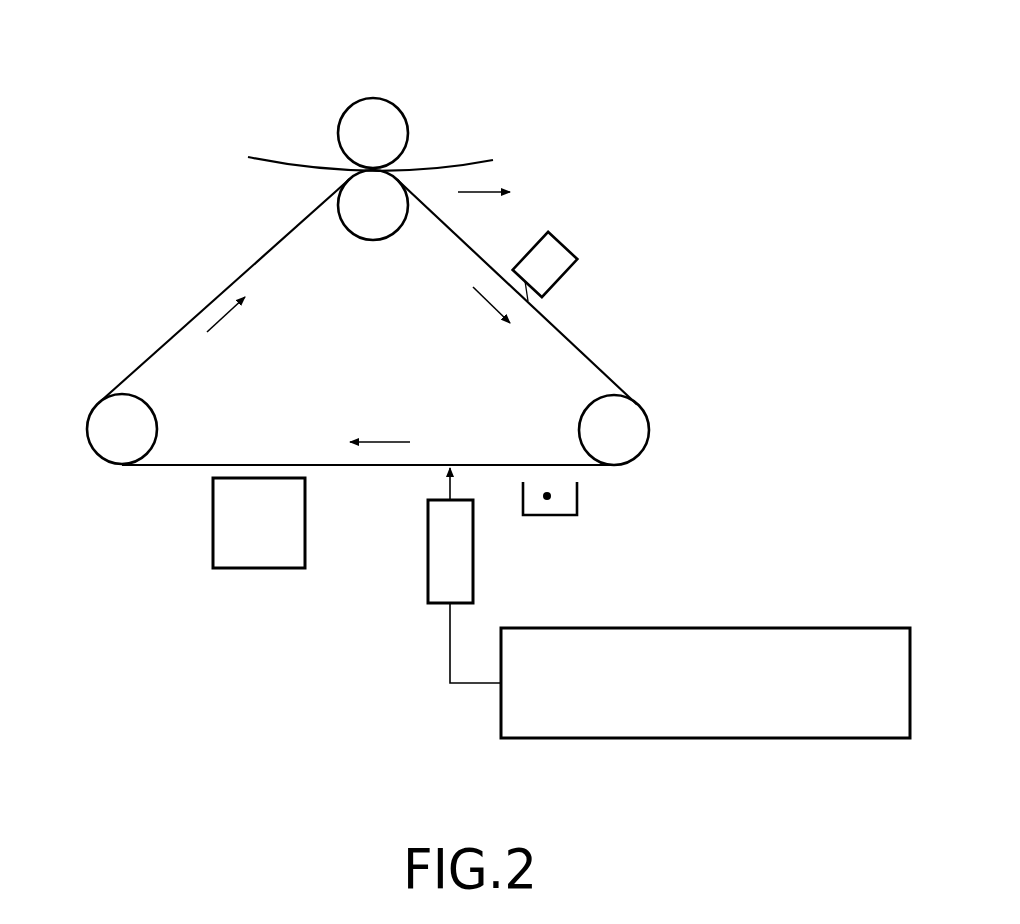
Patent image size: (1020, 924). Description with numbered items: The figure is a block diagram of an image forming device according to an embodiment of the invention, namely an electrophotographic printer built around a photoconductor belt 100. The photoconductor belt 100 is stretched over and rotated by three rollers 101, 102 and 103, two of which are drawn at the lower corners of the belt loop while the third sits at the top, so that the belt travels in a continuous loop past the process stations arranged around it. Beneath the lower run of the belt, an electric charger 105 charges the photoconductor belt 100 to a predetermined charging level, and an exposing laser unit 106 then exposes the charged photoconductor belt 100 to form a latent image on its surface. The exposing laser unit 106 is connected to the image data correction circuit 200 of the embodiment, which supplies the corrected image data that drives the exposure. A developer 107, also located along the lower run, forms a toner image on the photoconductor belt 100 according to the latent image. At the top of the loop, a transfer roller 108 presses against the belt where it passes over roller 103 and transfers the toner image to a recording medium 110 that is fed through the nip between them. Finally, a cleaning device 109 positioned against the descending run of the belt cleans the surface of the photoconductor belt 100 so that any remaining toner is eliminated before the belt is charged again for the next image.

The photoconductor belt 100 is at (590, 360).
The roller 101 is at (640, 425).
The roller 102 is at (113, 450).
The roller 103 is at (367, 227).
The electric charger 105 is at (557, 515).
The exposing laser unit 106 is at (473, 567).
The developer 107 is at (260, 572).
The transfer roller 108 is at (387, 102).
The cleaning device 109 is at (567, 242).
The recording medium 110 is at (475, 160).
The image data correction circuit 200 is at (810, 628).